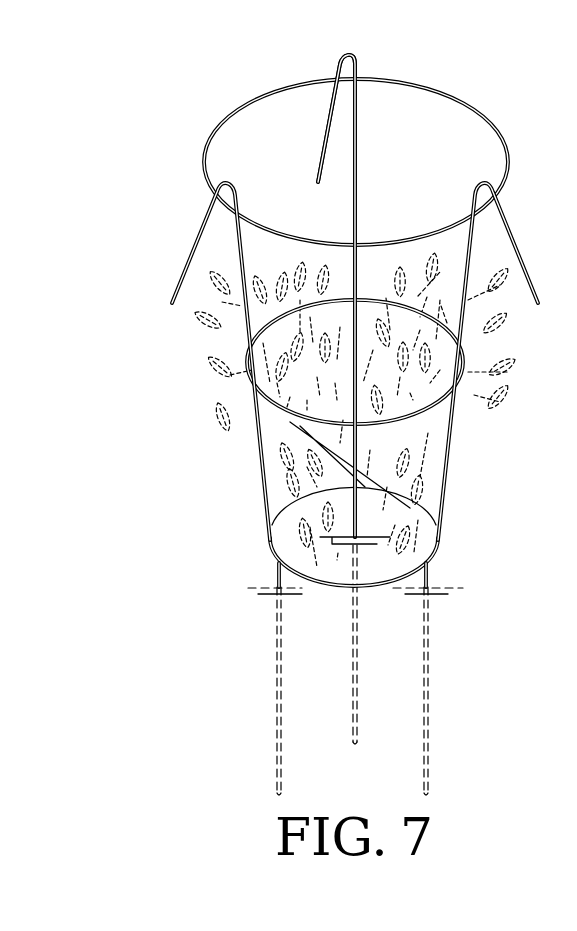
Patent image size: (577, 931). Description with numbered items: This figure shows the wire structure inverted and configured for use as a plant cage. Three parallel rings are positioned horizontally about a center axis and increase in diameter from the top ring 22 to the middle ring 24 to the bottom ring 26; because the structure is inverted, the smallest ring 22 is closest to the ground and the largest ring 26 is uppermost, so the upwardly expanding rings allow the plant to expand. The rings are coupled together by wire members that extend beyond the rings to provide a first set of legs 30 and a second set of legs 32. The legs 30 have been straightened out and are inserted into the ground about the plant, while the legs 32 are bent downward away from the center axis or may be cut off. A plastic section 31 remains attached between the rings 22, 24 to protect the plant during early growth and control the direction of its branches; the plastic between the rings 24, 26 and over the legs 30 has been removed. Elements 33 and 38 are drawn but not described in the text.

The top ring 22 is at (435, 555).
The middle ring 24 is at (250, 375).
The bottom ring 26 is at (470, 108).
The first set of legs 30 is at (278, 665).
The plastic section 31 is at (260, 462).
The second set of legs 32 is at (322, 113).
The crossbar 33 is at (330, 560).
The vertical support wire 38 is at (450, 467).